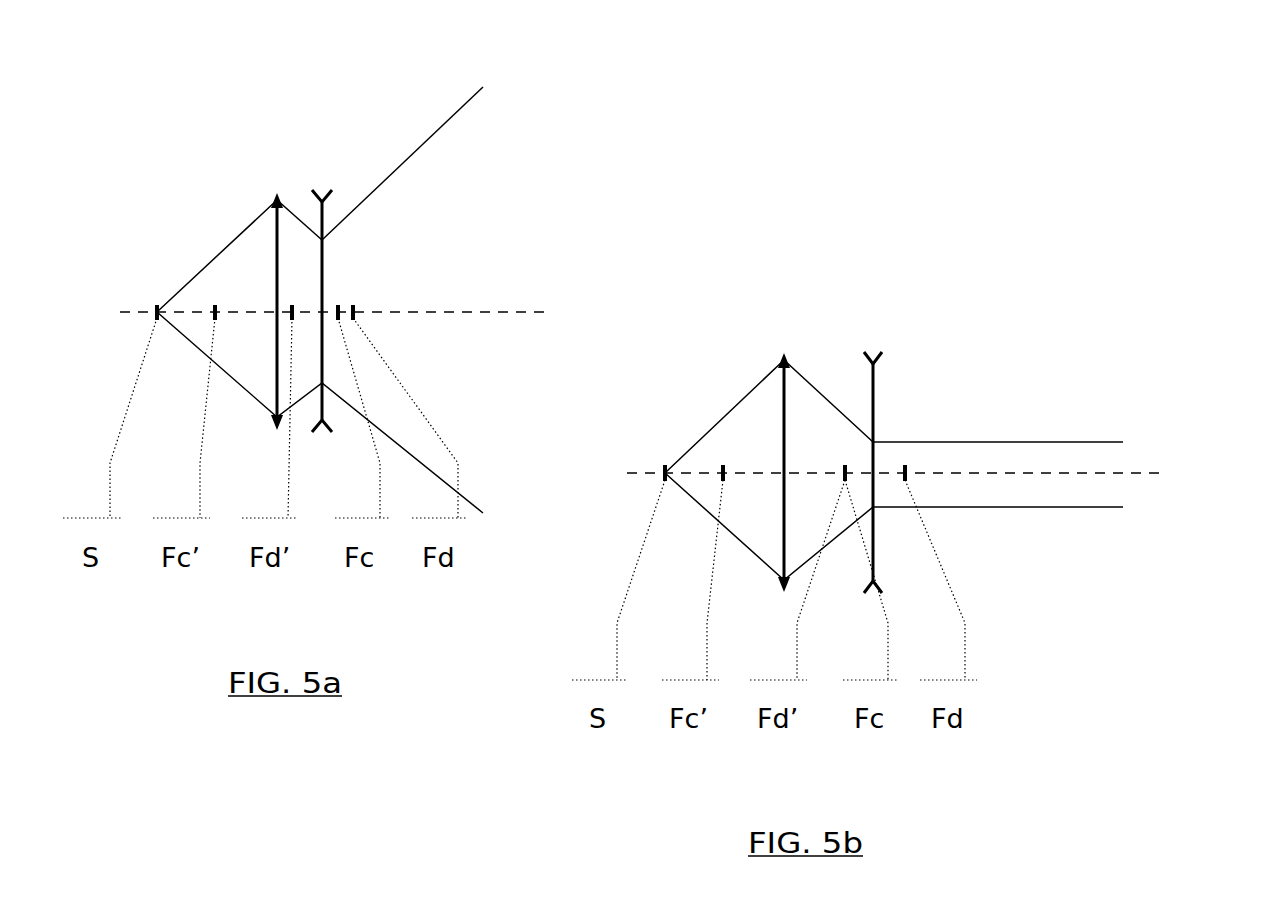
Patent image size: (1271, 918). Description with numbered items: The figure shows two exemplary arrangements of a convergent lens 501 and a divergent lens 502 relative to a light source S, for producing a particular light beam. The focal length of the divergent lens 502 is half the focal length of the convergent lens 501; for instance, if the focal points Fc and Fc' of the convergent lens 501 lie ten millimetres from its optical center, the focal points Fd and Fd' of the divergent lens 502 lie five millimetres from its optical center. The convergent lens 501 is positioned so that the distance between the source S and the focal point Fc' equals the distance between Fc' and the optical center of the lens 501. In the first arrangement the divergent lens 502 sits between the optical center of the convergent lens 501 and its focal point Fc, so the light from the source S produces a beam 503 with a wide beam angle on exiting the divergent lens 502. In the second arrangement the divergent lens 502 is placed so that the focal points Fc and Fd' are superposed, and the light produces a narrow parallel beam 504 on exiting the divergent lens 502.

In FIG. 5a, the convergent lens 501 is at (272, 195).
In FIG. 5b, the convergent lens 501 is at (783, 355).
In FIG. 5a, the divergent lens 502 is at (322, 272).
In FIG. 5b, the divergent lens 502 is at (873, 402).
In FIG. 5a, the beam 503 is at (462, 107).
In FIG. 5b, the narrow parallel beam 504 is at (1098, 442).